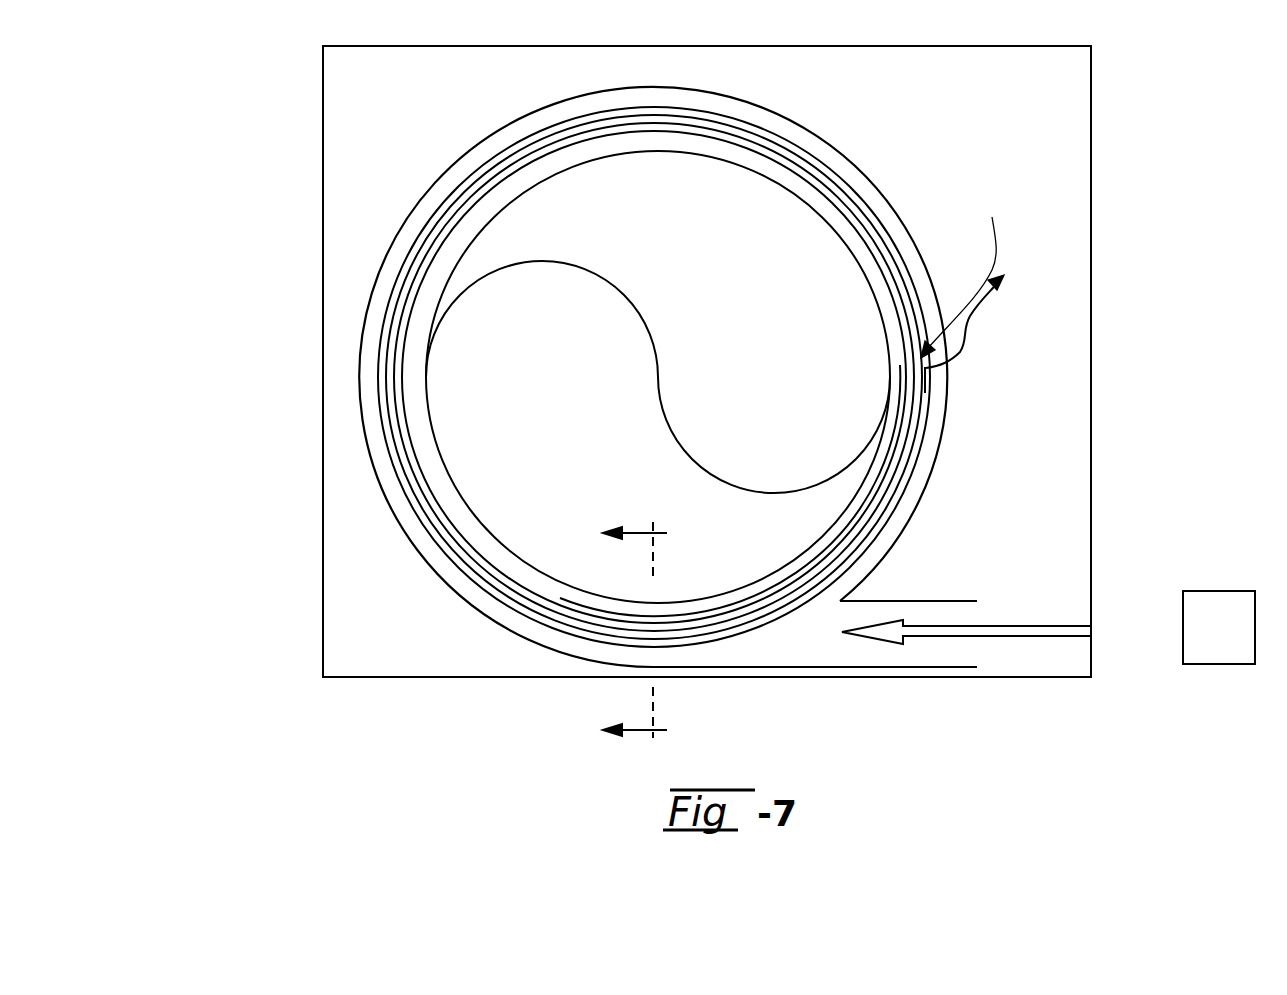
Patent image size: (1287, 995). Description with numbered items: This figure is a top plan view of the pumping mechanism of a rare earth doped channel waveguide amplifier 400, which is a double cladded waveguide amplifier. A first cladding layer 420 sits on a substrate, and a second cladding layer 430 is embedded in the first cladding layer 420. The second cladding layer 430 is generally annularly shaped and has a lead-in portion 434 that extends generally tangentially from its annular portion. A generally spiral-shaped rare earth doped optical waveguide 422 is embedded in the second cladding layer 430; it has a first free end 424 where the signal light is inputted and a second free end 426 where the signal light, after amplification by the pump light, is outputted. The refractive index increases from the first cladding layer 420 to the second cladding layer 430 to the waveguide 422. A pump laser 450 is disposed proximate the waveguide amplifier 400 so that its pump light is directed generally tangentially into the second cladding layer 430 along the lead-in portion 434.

The waveguide amplifier 400 is at (673, 401).
The first cladding layer 420 is at (378, 628).
The rare earth doped optical waveguide 422 is at (373, 366).
The first free end 424 is at (925, 413).
The second free end 426 is at (928, 376).
The second cladding layer 430 is at (372, 415).
The lead-in portion 434 is at (918, 650).
The pump laser 450 is at (1222, 590).